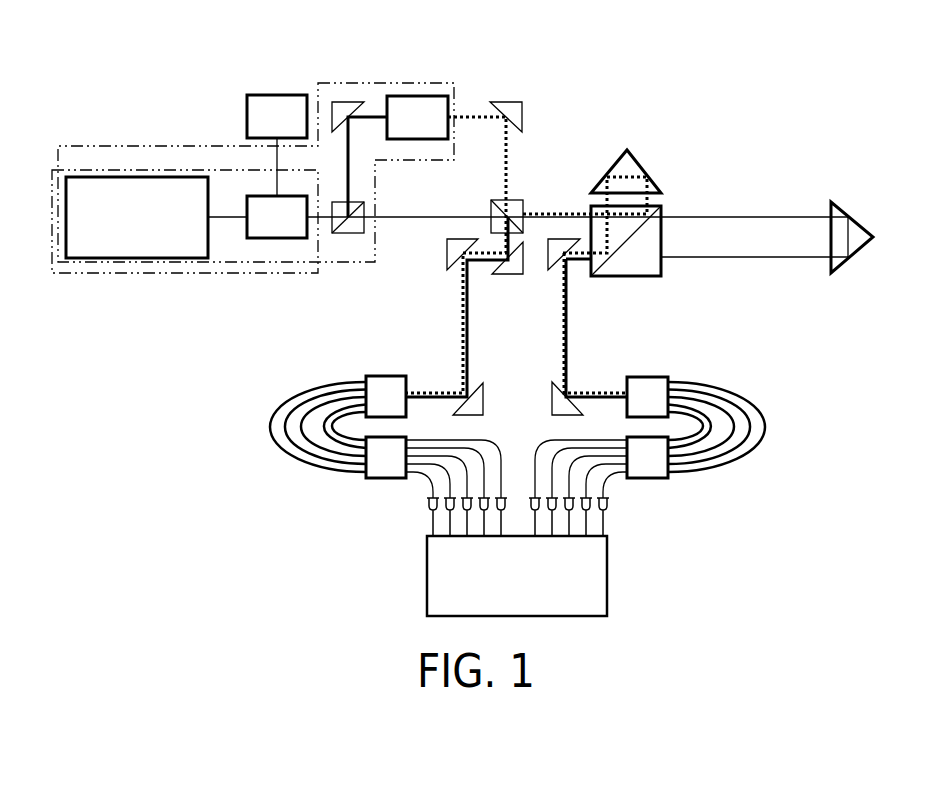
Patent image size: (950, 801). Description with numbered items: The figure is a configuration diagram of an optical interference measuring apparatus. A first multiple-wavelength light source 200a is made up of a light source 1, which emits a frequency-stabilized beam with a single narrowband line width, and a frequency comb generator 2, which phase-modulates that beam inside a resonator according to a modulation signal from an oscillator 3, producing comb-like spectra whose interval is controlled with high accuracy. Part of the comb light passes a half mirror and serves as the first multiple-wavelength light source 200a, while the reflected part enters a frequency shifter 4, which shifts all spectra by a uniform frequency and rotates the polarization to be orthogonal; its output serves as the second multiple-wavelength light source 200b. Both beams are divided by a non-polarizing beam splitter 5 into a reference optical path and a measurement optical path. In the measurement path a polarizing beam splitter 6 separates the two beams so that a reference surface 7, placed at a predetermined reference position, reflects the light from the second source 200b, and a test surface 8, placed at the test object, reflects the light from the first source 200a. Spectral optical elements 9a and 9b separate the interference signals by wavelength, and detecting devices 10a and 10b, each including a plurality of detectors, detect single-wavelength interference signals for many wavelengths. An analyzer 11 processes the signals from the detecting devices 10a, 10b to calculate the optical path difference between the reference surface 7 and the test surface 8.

The light source 1 is at (147, 243).
The frequency comb generator 2 is at (273, 230).
The oscillator 3 is at (270, 118).
The frequency shifter 4 is at (418, 113).
The non-polarizing beam splitter 5 is at (527, 203).
The polarizing beam splitter 6 is at (653, 268).
The reference surface 7 is at (625, 183).
The test surface 8 is at (837, 212).
The spectral optical element 9a is at (357, 393).
The spectral optical element 9b is at (650, 460).
The detecting device 10a is at (427, 502).
The detecting device 10b is at (610, 503).
The analyzer 11 is at (586, 551).
The first multiple-wavelength light source 200a is at (250, 273).
The second multiple-wavelength light source 200b is at (455, 108).